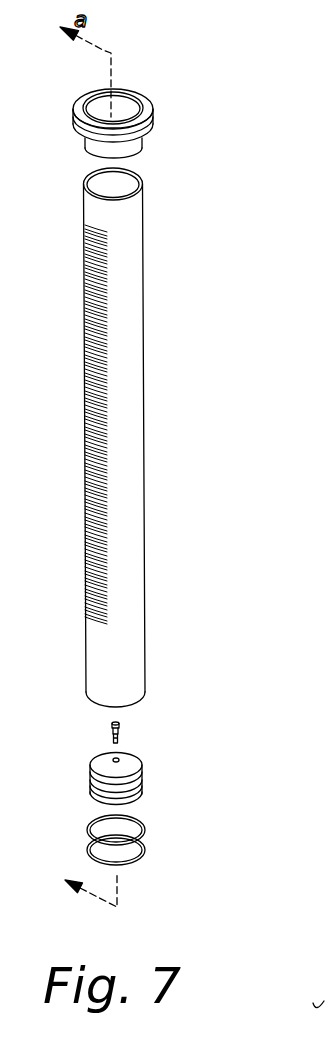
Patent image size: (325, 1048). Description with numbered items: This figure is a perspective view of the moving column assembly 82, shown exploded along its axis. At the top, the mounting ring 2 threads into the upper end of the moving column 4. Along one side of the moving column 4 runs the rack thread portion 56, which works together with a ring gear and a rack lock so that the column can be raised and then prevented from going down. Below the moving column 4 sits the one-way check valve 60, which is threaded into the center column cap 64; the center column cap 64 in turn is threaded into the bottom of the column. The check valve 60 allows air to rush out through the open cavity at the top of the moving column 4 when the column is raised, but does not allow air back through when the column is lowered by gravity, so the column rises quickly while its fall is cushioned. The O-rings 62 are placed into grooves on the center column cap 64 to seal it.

The mounting ring 2 is at (147, 98).
The moving column 4 is at (84, 200).
The rack thread portion 56 is at (92, 550).
The one-way check valve 60 is at (123, 727).
The O-rings 62 is at (144, 841).
The center column cap 64 is at (141, 765).
The moving column assembly 82 is at (202, 124).